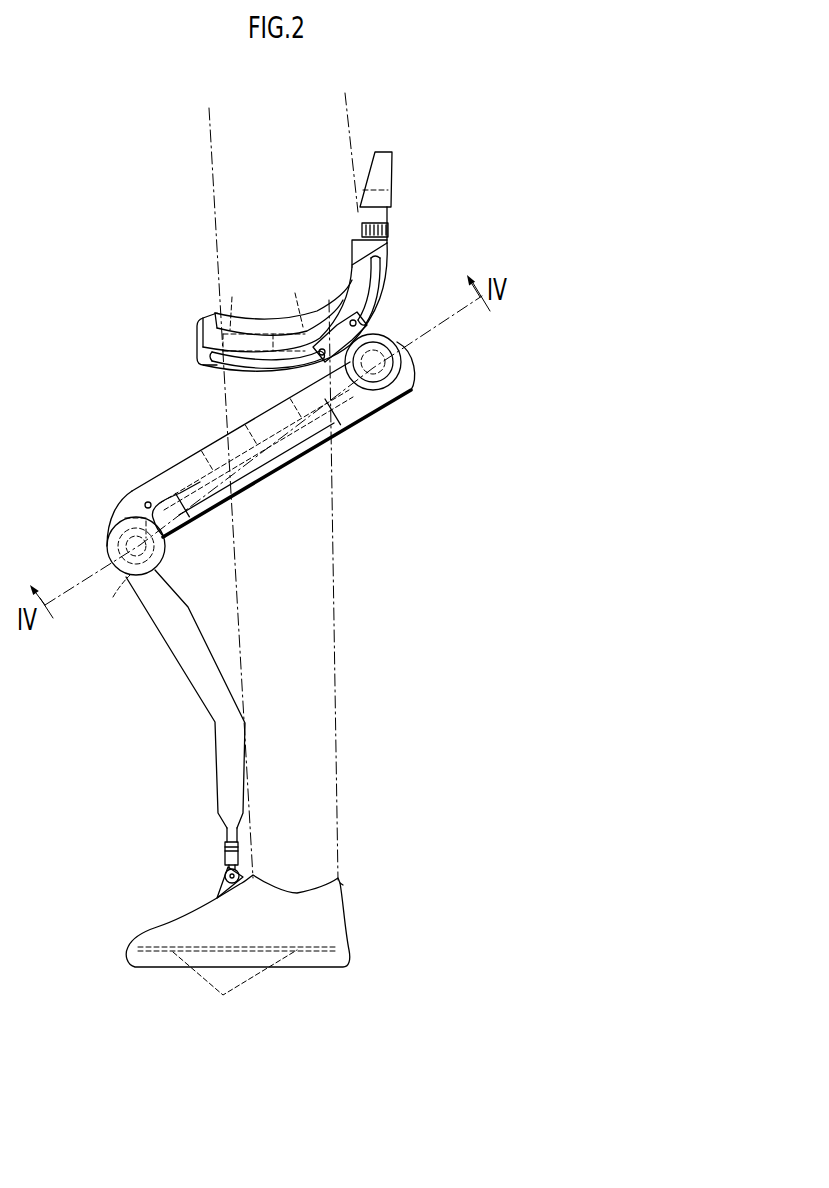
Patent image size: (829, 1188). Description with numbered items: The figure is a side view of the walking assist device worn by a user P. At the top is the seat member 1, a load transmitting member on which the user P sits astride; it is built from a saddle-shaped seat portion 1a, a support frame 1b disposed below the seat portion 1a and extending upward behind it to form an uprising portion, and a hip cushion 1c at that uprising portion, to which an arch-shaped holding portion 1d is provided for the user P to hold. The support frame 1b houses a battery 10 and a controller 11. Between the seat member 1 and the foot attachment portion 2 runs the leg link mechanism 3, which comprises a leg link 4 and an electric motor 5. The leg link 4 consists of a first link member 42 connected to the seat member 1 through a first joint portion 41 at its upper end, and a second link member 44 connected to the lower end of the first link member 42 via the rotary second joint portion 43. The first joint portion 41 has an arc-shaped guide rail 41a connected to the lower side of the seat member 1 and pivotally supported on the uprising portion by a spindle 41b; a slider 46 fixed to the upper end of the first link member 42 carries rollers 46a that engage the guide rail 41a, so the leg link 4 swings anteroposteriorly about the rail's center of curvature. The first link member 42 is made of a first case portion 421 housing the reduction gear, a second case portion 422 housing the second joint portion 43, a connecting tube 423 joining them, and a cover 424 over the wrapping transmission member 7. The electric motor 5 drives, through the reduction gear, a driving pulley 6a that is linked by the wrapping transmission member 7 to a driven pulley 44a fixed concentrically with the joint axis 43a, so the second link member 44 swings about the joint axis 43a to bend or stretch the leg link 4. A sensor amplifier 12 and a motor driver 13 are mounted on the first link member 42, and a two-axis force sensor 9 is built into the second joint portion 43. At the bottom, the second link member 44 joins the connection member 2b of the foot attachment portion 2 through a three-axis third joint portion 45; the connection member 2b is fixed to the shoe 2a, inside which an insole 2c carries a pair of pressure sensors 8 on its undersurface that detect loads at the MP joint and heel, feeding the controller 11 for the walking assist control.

The user P is at (208, 152).
The seat member 1 is at (255, 298).
The seat portion 1a is at (320, 307).
The support frame 1b is at (198, 333).
The hip cushion 1c is at (353, 250).
The holding portion 1d is at (387, 152).
The battery 10 is at (231, 297).
The controller 11 is at (295, 294).
The sensor amplifier 12 is at (232, 483).
The motor driver 13 is at (297, 443).
The foot attachment portion 2 is at (129, 914).
The shoe 2a is at (348, 922).
The connection member 2b is at (218, 887).
The insole 2c is at (253, 947).
The leg link mechanism 3 is at (112, 469).
The leg link 4 is at (210, 612).
The electric motor 5 is at (402, 363).
The driving pulley 6a is at (411, 376).
The wrapping transmission member 7 is at (202, 457).
The pressure sensor 8 is at (235, 988).
The force sensor 9 is at (225, 857).
The first joint portion 41 is at (392, 302).
The guide rail 41a is at (388, 273).
The spindle 41b is at (388, 232).
The first link member 42 is at (270, 480).
The first case portion 421 is at (385, 355).
The second case portion 422 is at (177, 522).
The connecting tube 423 is at (320, 440).
The cover 424 is at (158, 477).
The second joint portion 43 is at (85, 560).
The joint axis 43a is at (165, 559).
The second link member 44 is at (215, 723).
The driven pulley 44a is at (113, 597).
The third joint portion 45 is at (199, 872).
The slider 46 is at (300, 380).
The roller 46a is at (357, 324).